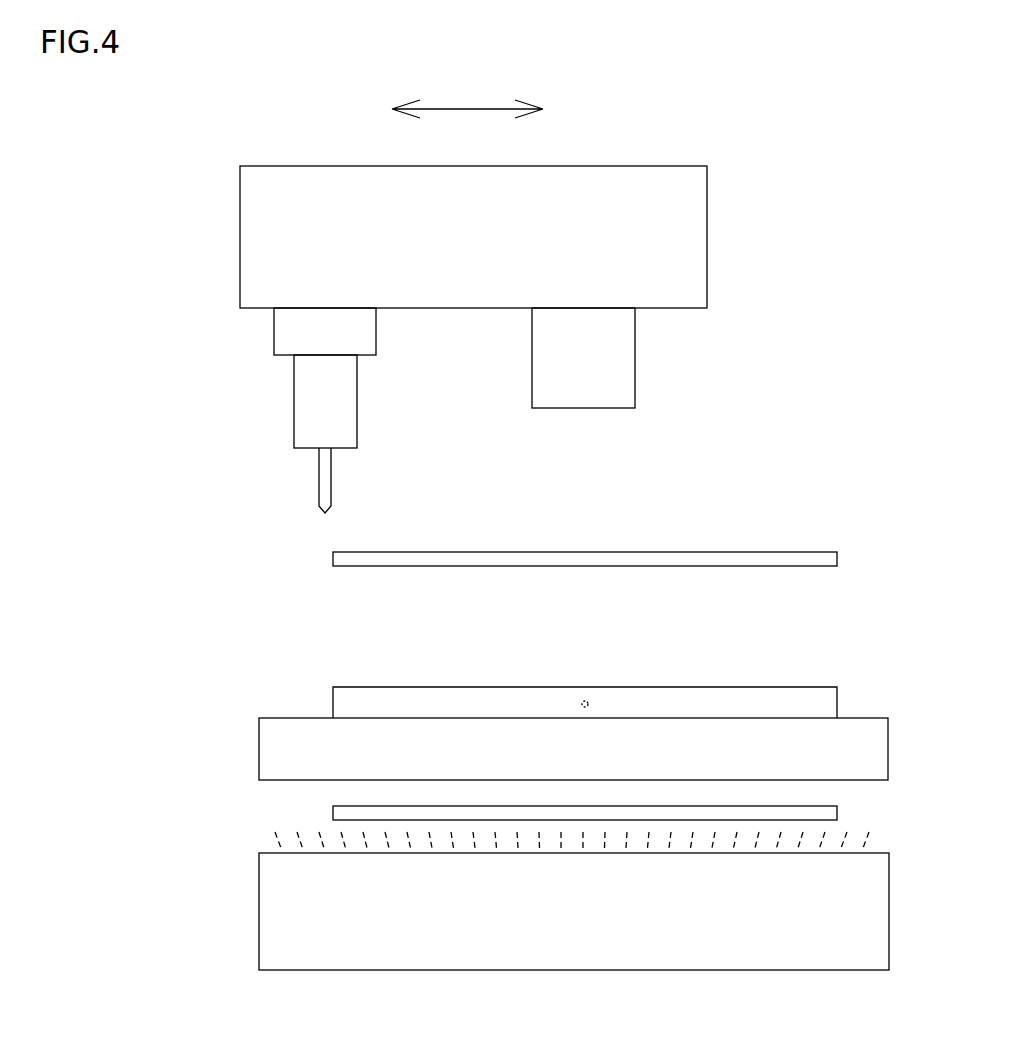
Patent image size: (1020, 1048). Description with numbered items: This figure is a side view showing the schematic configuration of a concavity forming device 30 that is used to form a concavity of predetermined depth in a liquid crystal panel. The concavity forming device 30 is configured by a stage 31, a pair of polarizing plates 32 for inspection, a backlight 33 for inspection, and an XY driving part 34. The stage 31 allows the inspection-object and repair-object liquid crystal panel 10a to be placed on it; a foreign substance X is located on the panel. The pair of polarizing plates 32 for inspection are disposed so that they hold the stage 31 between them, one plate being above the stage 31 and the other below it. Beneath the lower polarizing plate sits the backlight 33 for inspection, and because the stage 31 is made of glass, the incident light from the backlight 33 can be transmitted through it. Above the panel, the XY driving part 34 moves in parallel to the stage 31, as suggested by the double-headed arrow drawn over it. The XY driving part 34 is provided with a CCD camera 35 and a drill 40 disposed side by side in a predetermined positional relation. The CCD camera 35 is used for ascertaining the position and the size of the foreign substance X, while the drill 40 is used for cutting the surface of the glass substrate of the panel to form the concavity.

The XY driving part 34 is at (622, 190).
The CCD camera 35 is at (622, 365).
The drill 40 is at (325, 482).
The concavity forming device 30 is at (170, 672).
The polarizing plates for inspection 32 is at (813, 557).
The liquid crystal panel 10a is at (816, 698).
The foreign substance X is at (585, 702).
The stage 31 is at (267, 740).
The backlight for inspection 33 is at (371, 950).